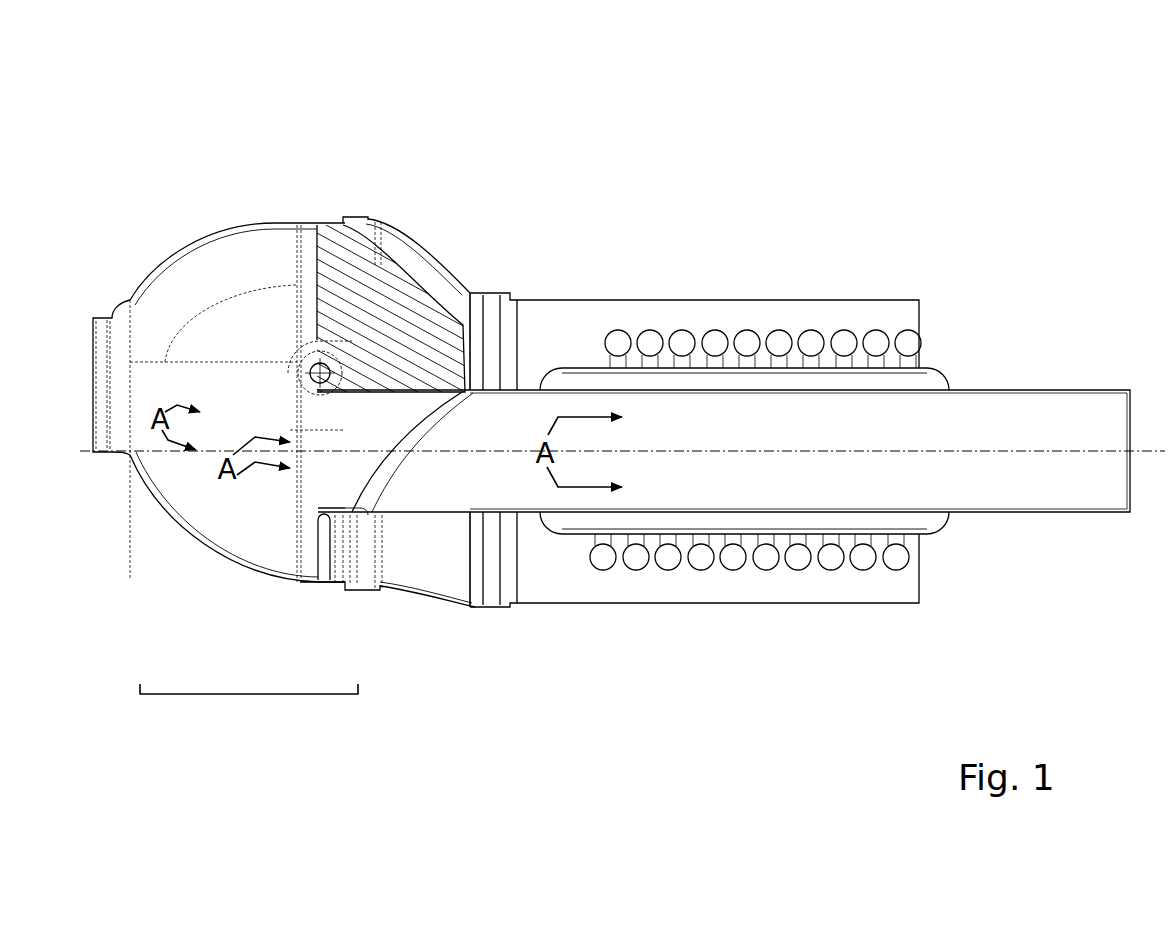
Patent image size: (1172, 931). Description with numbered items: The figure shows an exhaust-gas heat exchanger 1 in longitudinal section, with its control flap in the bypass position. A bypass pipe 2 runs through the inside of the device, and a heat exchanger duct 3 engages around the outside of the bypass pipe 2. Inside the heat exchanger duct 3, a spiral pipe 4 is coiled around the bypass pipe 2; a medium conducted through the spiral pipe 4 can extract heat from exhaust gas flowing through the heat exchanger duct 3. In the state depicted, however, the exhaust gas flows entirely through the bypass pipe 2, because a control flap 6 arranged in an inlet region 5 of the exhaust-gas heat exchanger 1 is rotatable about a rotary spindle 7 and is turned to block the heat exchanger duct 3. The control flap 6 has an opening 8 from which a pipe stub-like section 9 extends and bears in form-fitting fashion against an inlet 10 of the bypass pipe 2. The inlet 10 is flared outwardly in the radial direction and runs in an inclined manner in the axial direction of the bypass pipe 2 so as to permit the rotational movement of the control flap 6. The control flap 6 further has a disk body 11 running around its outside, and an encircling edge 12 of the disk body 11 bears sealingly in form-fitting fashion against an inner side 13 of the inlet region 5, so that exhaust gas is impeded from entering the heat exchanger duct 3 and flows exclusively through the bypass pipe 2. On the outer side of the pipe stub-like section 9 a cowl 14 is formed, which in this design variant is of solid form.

The exhaust-gas heat exchanger 1 is at (715, 135).
The bypass pipe 2 is at (1050, 383).
The heat exchanger duct 3 is at (830, 298).
The spiral pipe 4 is at (918, 345).
The inlet region 5 is at (240, 694).
The control flap 6 is at (343, 315).
The rotary spindle 7 is at (322, 372).
The opening 8 is at (333, 480).
The pipe stub-like section 9 is at (390, 391).
The inlet 10 is at (378, 510).
The disk body 11 is at (316, 542).
The encircling edge 12 is at (321, 585).
The inner side 13 is at (230, 560).
The cowl 14 is at (420, 347).